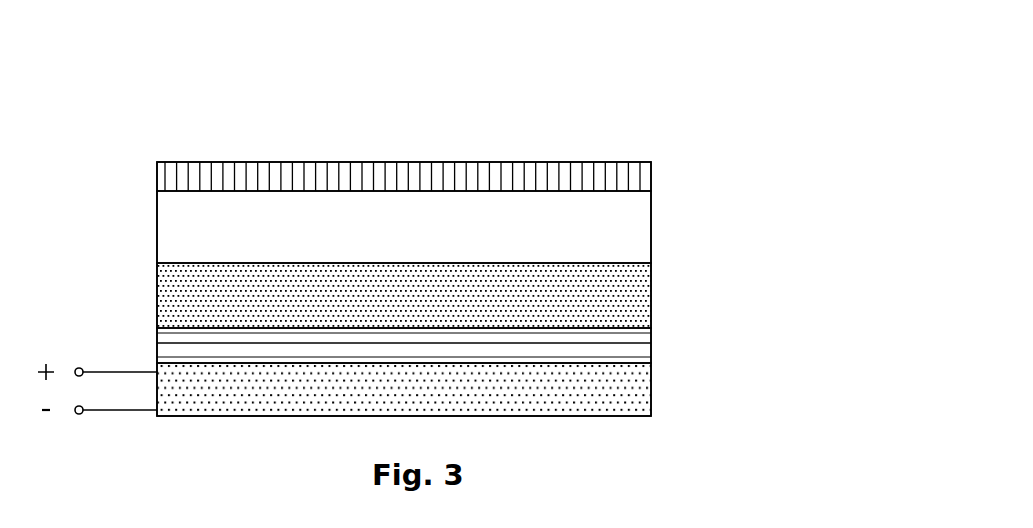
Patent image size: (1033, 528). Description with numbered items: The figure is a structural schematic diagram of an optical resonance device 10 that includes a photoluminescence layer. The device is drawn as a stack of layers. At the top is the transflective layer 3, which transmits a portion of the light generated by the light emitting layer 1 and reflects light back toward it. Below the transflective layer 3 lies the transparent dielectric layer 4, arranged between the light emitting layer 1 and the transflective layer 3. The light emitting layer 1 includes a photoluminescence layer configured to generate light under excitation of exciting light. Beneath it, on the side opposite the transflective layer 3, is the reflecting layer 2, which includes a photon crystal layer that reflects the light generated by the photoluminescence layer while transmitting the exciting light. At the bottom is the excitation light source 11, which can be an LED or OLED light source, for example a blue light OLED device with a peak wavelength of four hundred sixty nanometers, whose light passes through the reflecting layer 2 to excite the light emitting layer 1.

The optical resonance device 10 is at (624, 130).
The transflective layer 3 is at (651, 179).
The transparent dielectric layer 4 is at (651, 225).
The light emitting layer 1 is at (651, 298).
The reflecting layer 2 is at (651, 343).
The excitation light source 11 is at (651, 389).